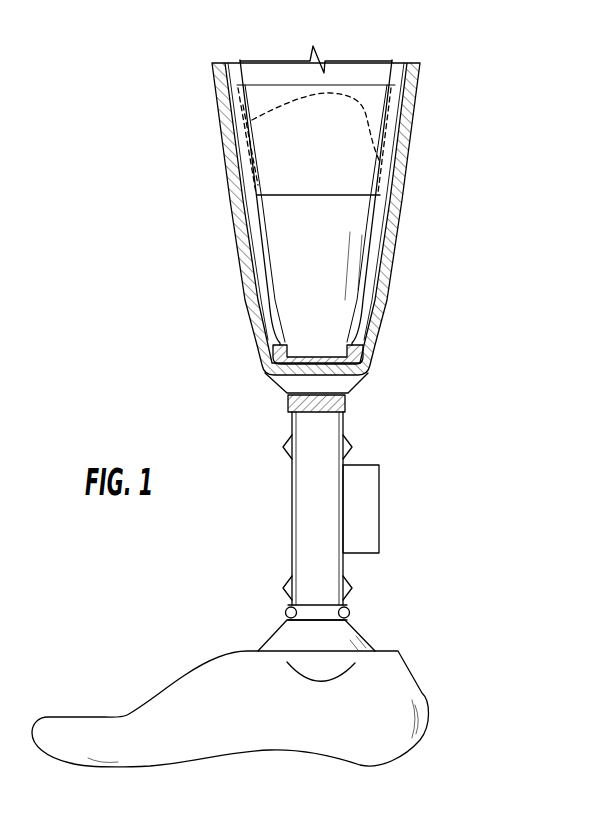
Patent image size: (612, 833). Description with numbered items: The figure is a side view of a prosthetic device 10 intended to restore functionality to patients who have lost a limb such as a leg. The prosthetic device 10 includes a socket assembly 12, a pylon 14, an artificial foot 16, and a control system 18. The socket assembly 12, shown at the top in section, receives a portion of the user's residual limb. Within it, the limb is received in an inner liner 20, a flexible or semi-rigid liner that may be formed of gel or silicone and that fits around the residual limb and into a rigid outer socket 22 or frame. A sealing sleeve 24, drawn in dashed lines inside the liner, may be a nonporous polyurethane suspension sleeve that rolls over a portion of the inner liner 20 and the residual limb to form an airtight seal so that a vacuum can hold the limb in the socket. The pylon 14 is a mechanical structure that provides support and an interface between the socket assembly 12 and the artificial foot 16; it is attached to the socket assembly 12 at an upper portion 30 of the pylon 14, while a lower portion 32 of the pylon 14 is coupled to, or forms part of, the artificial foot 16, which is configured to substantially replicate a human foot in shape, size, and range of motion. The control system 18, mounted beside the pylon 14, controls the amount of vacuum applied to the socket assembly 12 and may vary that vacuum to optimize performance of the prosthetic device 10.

The prosthetic device 10 is at (165, 221).
The socket assembly 12 is at (432, 182).
The pylon 14 is at (291, 531).
The artificial foot 16 is at (397, 682).
The control system 18 is at (367, 516).
The inner liner 20 is at (375, 232).
The outer socket 22 is at (380, 300).
The sealing sleeve 24 is at (378, 120).
The upper portion 30 is at (238, 393).
The lower portion 32 is at (245, 626).